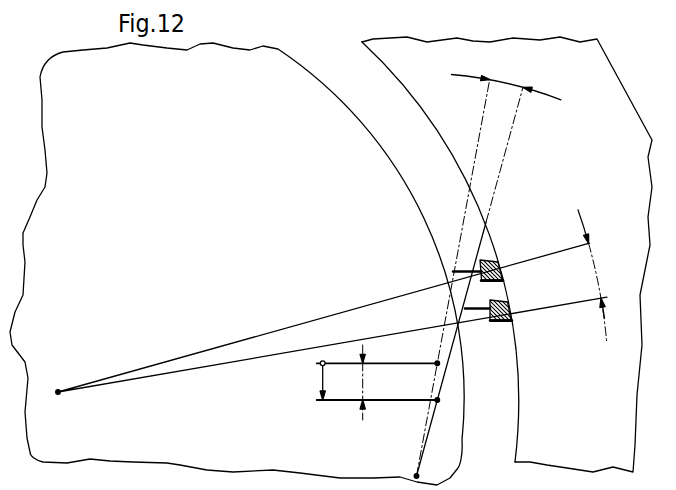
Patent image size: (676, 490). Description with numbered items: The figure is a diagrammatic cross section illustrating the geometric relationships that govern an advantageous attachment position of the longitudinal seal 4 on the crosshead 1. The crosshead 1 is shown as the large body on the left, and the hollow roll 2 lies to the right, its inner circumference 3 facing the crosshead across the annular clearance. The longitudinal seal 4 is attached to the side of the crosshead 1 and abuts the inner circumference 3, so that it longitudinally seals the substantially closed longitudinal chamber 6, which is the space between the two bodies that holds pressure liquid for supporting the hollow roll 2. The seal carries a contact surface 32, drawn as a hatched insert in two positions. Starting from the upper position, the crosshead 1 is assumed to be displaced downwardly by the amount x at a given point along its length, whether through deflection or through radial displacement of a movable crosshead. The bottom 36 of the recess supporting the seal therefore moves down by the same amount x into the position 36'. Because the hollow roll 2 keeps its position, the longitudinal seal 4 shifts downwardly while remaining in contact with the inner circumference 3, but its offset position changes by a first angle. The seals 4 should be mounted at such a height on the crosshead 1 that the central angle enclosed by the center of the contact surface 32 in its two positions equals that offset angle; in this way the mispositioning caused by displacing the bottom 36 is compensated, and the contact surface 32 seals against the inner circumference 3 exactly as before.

The crosshead 1 is at (274, 150).
The hollow roll 2 is at (553, 150).
The inner circumference 3 is at (515, 425).
The longitudinal seal 4 is at (479, 333).
The longitudinal chamber 6 is at (414, 150).
The contact surface 32 is at (502, 262).
The bottom of the recess 36 is at (403, 278).
The displaced position of the recess bottom 36' is at (420, 283).
The center point M is at (58, 394).
The amount of displacement x is at (342, 382).